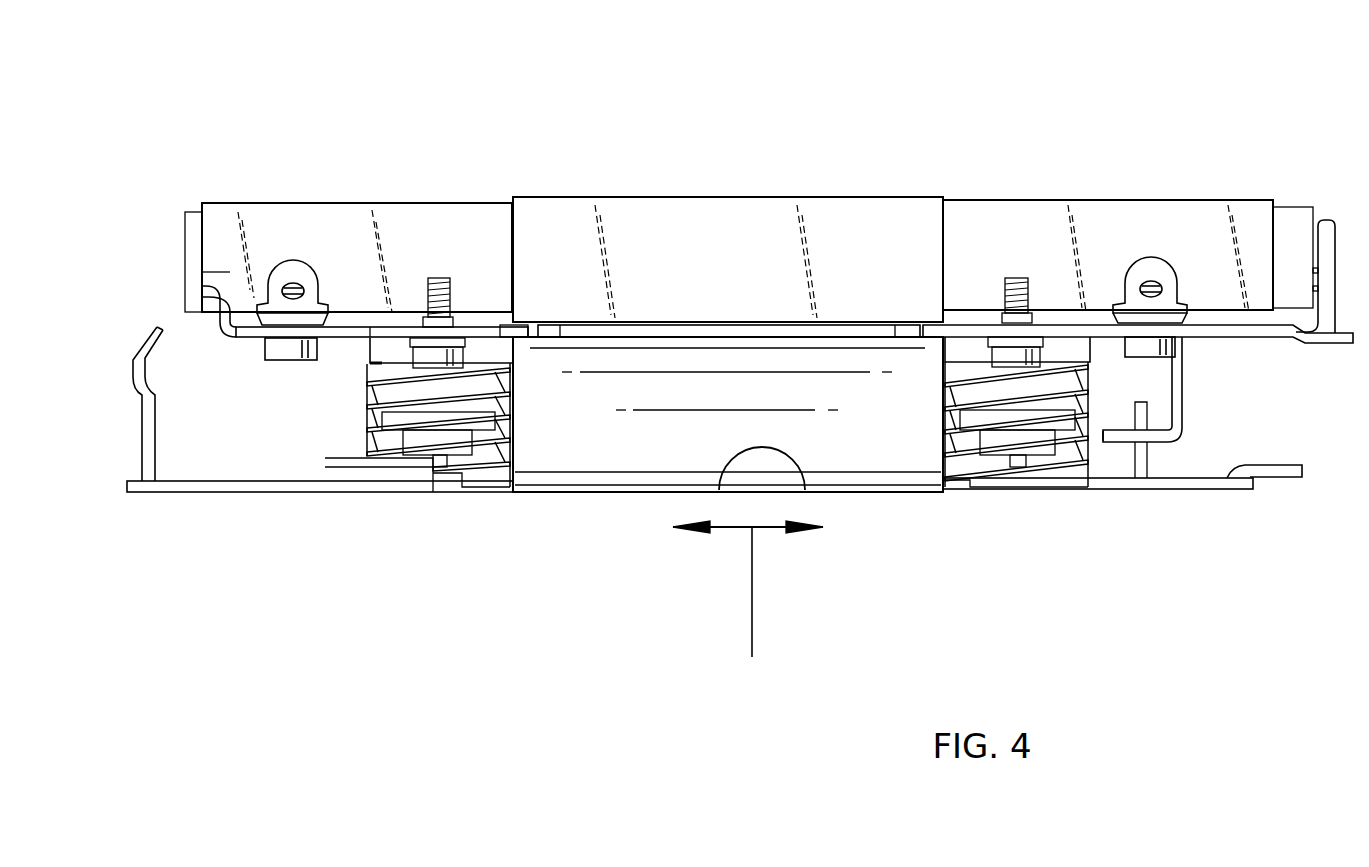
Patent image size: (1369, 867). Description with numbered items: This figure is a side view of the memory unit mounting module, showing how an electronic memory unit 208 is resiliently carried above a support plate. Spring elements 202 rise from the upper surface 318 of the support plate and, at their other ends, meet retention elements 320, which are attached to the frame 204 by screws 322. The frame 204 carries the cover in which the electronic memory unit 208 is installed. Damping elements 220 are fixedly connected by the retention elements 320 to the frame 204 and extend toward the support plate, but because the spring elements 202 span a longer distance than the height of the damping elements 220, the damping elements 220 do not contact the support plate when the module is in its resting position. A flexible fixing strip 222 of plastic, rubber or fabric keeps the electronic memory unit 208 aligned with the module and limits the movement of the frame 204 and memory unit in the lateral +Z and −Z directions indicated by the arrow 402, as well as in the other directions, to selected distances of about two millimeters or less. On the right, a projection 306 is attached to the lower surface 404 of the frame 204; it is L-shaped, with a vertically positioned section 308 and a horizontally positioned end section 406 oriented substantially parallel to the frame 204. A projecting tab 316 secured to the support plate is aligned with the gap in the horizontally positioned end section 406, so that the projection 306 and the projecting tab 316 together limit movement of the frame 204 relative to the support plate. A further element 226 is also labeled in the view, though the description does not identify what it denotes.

The spring elements 202 is at (367, 430).
The frame 204 is at (1322, 338).
The electronic memory unit 208 is at (1296, 222).
The damping elements 220 is at (1086, 400).
The fixing strip 222 is at (532, 447).
The mounting plate 226 is at (528, 327).
The projection 306 is at (1183, 367).
The vertically positioned section 308 is at (1183, 405).
The projecting tab 316 is at (1142, 463).
The upper surface 318 is at (210, 482).
The retention element 320 is at (364, 360).
The screws 322 is at (437, 277).
The arrow 402 is at (748, 610).
The lower surface 404 is at (242, 342).
The horizontally positioned end section 406 is at (1120, 437).